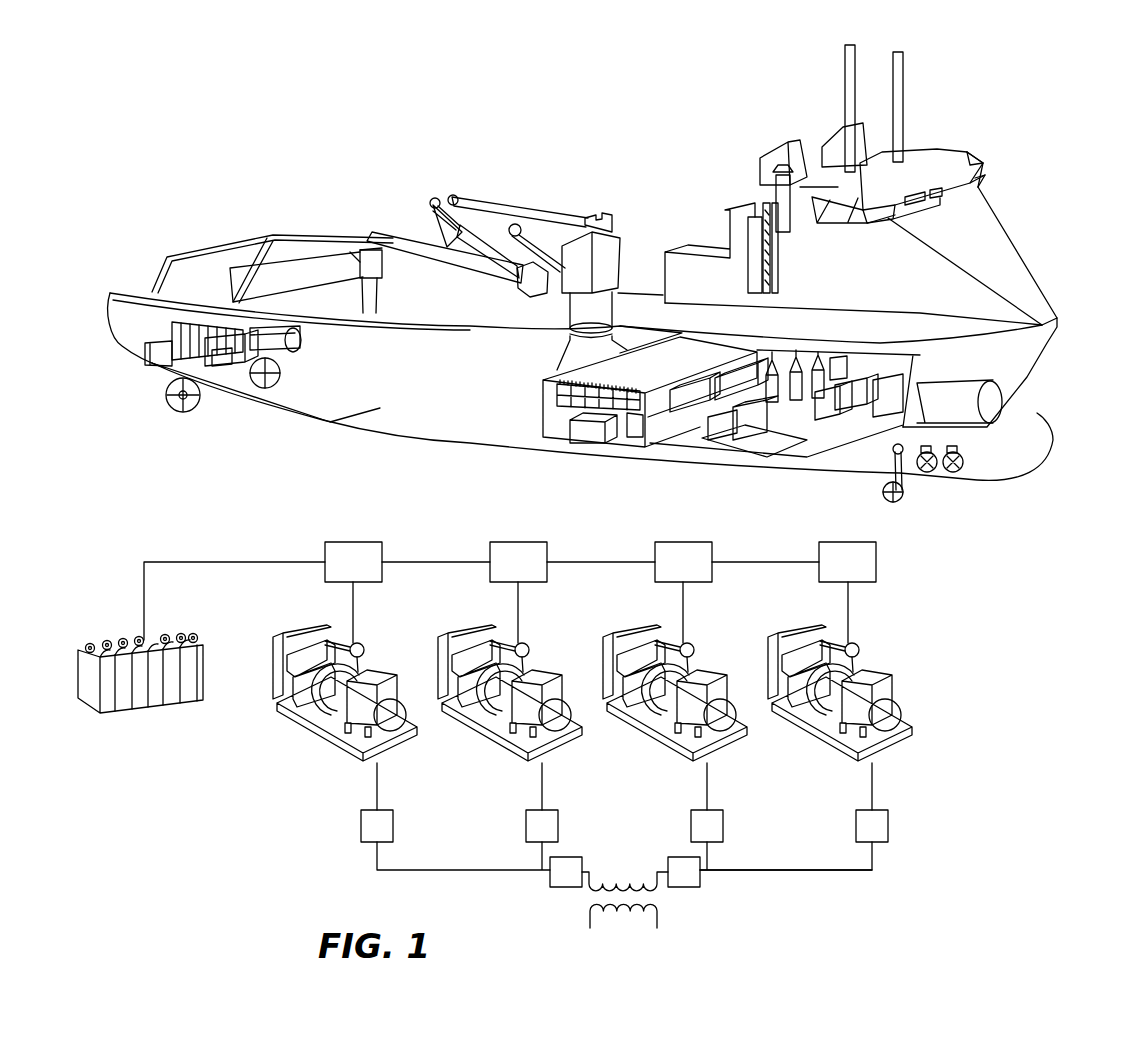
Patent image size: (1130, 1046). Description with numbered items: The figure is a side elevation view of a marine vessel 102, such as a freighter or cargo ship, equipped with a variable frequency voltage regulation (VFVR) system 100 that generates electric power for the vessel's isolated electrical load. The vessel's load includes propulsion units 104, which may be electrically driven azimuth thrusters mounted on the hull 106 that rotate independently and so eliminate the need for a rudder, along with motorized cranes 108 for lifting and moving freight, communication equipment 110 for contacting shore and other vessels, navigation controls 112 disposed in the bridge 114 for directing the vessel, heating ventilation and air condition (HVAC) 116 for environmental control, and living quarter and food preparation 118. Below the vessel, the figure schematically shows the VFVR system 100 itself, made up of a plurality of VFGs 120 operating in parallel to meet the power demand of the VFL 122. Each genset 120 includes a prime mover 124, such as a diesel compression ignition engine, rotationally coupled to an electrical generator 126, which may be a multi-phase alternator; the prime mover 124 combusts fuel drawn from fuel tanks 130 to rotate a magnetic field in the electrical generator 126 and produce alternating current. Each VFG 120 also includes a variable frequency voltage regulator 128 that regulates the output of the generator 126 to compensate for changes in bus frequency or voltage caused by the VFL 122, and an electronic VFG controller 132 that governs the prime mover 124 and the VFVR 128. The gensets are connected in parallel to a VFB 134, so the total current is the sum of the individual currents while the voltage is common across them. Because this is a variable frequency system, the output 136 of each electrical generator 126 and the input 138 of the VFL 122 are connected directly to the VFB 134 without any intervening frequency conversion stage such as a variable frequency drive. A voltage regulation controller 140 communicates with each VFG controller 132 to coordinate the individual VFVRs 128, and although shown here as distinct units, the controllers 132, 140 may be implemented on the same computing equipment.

The VFVR system 100 is at (690, 449).
The marine vessel 102 is at (640, 160).
The propulsion units 104 is at (172, 400).
The hull 106 is at (1053, 458).
The motorized cranes 108 is at (332, 240).
The communication equipment 110 is at (900, 110).
The navigation controls 112 is at (907, 187).
The bridge 114 is at (996, 174).
The heating ventilation and air condition (HVAC) 116 is at (588, 436).
The living quarter and food preparation 118 is at (290, 335).
The VFGs 120 is at (397, 751).
The VFL 122 is at (587, 913).
The prime mover 124 is at (364, 651).
The electrical generator 126 is at (398, 710).
The variable frequency voltage regulator (VFVR) 128 is at (357, 697).
The fuel tanks 130 is at (987, 407).
The VFG controller 132 is at (600, 562).
The VFB 134 is at (797, 872).
The output 136 is at (361, 826).
The input 138 is at (567, 890).
The voltage regulation controller 140 is at (157, 708).